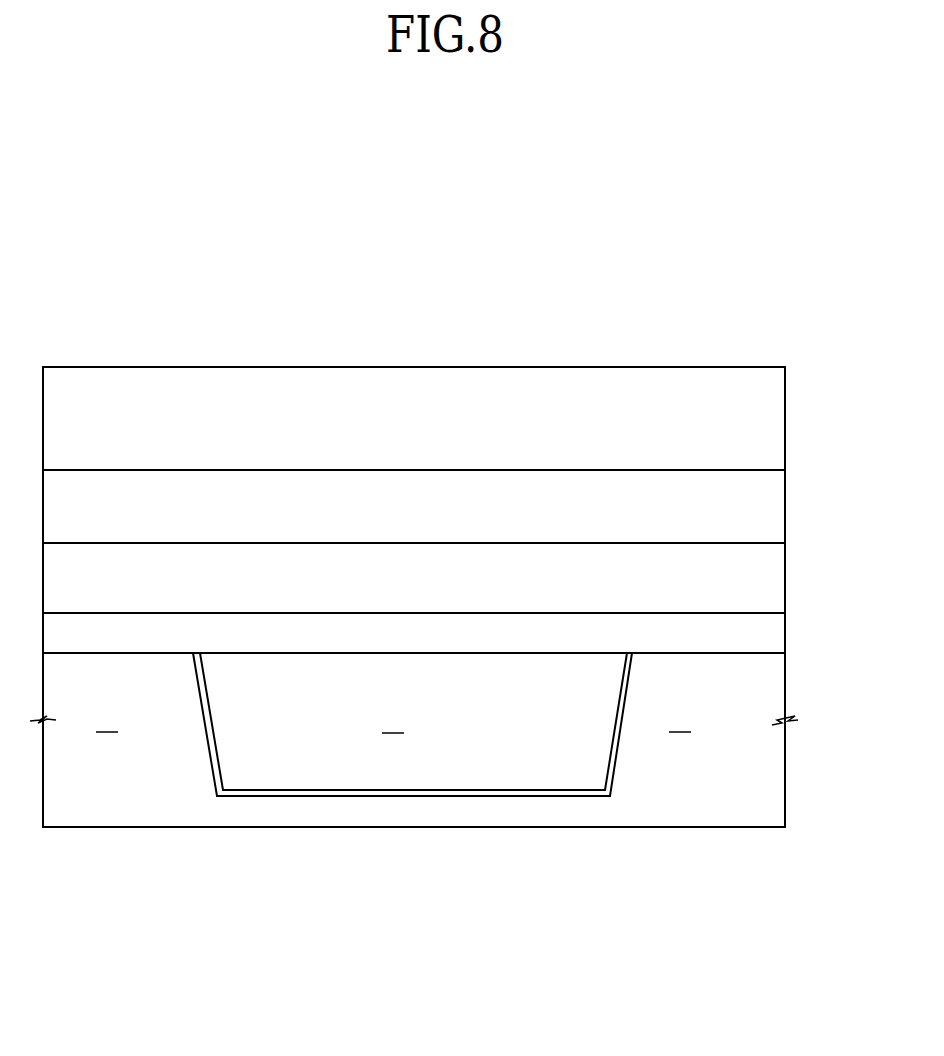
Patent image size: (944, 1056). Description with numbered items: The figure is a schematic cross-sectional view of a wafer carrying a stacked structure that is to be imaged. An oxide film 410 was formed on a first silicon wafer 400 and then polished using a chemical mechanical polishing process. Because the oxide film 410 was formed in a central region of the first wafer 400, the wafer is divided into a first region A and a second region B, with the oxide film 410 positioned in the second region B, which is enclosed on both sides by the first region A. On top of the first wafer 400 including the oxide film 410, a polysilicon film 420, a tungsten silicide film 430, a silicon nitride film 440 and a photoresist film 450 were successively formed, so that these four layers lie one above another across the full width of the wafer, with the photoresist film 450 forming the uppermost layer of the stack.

The first silicon wafer 400 is at (773, 787).
The oxide film 410 is at (560, 773).
The polysilicon film 420 is at (773, 641).
The tungsten silicide film 430 is at (773, 580).
The silicon nitride film 440 is at (773, 511).
The photoresist film 450 is at (773, 430).